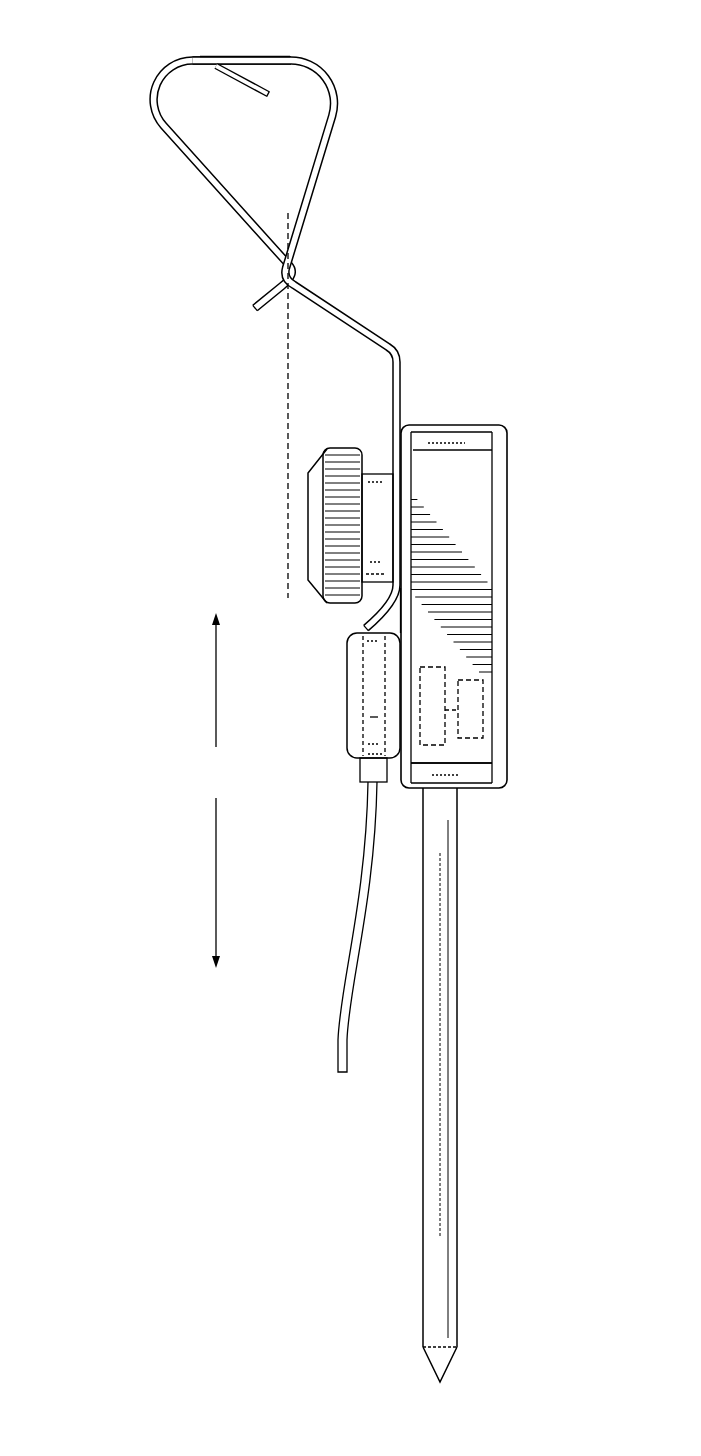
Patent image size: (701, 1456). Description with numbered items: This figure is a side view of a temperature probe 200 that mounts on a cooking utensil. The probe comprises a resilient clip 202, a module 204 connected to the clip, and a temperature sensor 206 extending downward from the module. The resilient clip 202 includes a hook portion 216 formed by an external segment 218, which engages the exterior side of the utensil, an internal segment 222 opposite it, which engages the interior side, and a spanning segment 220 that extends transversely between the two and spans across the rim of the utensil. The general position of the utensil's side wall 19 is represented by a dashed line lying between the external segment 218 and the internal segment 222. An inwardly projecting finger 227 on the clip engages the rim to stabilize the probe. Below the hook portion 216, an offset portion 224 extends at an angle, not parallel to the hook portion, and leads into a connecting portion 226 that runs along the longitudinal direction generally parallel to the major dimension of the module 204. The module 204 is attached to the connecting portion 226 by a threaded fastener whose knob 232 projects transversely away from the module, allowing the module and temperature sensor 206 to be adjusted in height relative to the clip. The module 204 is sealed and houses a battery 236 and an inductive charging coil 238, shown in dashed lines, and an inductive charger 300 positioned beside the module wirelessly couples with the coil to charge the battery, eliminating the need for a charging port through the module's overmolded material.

The side wall 19 is at (287, 369).
The temperature probe 200 is at (612, 316).
The resilient clip 202 is at (482, 366).
The module 204 is at (497, 508).
The temperature sensor 206 is at (457, 1143).
The hook portion 216 is at (102, 118).
The external segment 218 is at (207, 176).
The spanning segment 220 is at (240, 57).
The internal segment 222 is at (325, 145).
The offset portion 224 is at (348, 316).
The connecting portion 226 is at (401, 397).
The inwardly projecting finger 227 is at (240, 76).
The knob 232 is at (318, 578).
The battery 236 is at (483, 724).
The inductive charging coil 238 is at (432, 745).
The inductive charger 300 is at (351, 743).